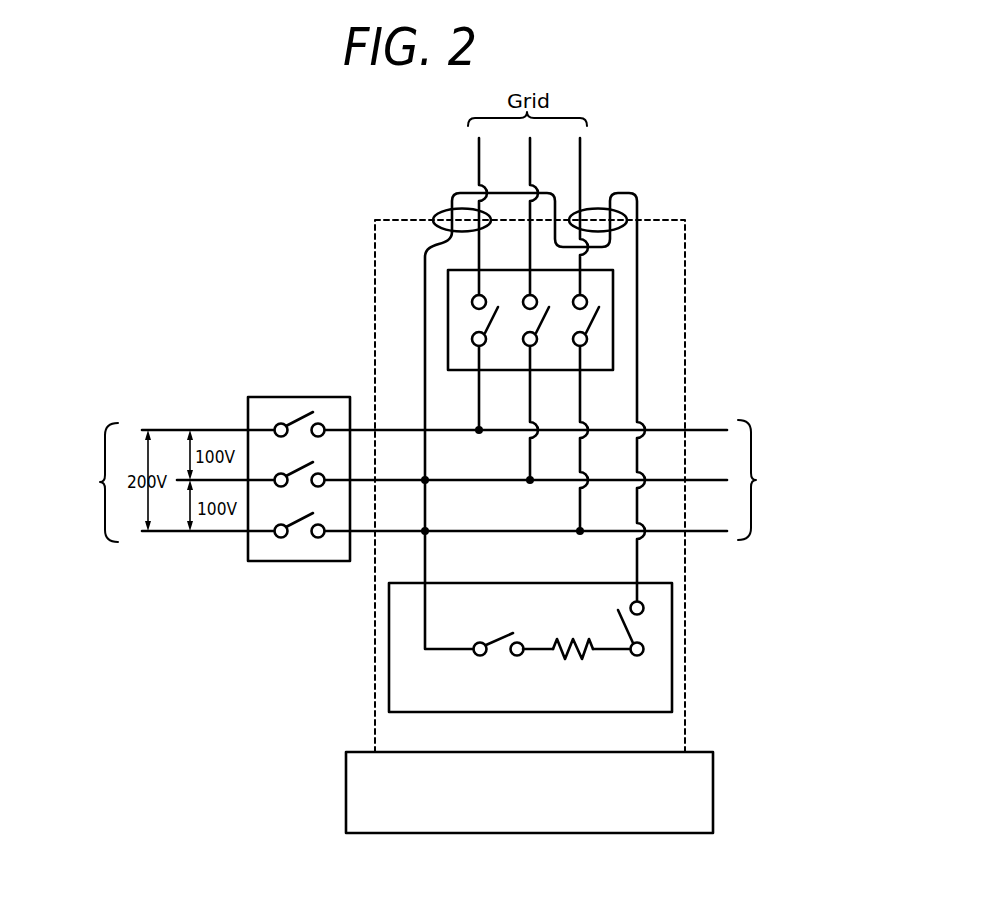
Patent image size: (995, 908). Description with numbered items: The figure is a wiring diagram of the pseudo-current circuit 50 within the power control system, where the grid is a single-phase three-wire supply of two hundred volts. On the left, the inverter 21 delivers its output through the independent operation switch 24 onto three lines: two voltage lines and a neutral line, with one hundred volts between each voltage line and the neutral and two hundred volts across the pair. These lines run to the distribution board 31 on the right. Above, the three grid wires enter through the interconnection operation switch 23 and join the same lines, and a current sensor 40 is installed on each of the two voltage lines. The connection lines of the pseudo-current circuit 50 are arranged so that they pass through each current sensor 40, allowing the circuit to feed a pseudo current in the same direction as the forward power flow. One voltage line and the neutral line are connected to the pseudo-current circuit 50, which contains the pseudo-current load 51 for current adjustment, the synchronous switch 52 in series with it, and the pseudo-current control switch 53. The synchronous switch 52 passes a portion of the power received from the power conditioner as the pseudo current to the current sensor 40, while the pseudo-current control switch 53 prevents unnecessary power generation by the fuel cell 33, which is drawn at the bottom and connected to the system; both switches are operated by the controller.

The inverter 21 is at (67, 482).
The interconnection operation switch 23 is at (595, 370).
The independent operation switch 24 is at (297, 397).
The distribution board 31 is at (814, 480).
The fuel cell 33 is at (530, 834).
The current sensor 40 is at (445, 212).
The pseudo-current circuit 50 is at (530, 628).
The pseudo-current load 51 is at (573, 658).
The synchronous switch 52 is at (498, 653).
The pseudo-current control switch 53 is at (620, 626).